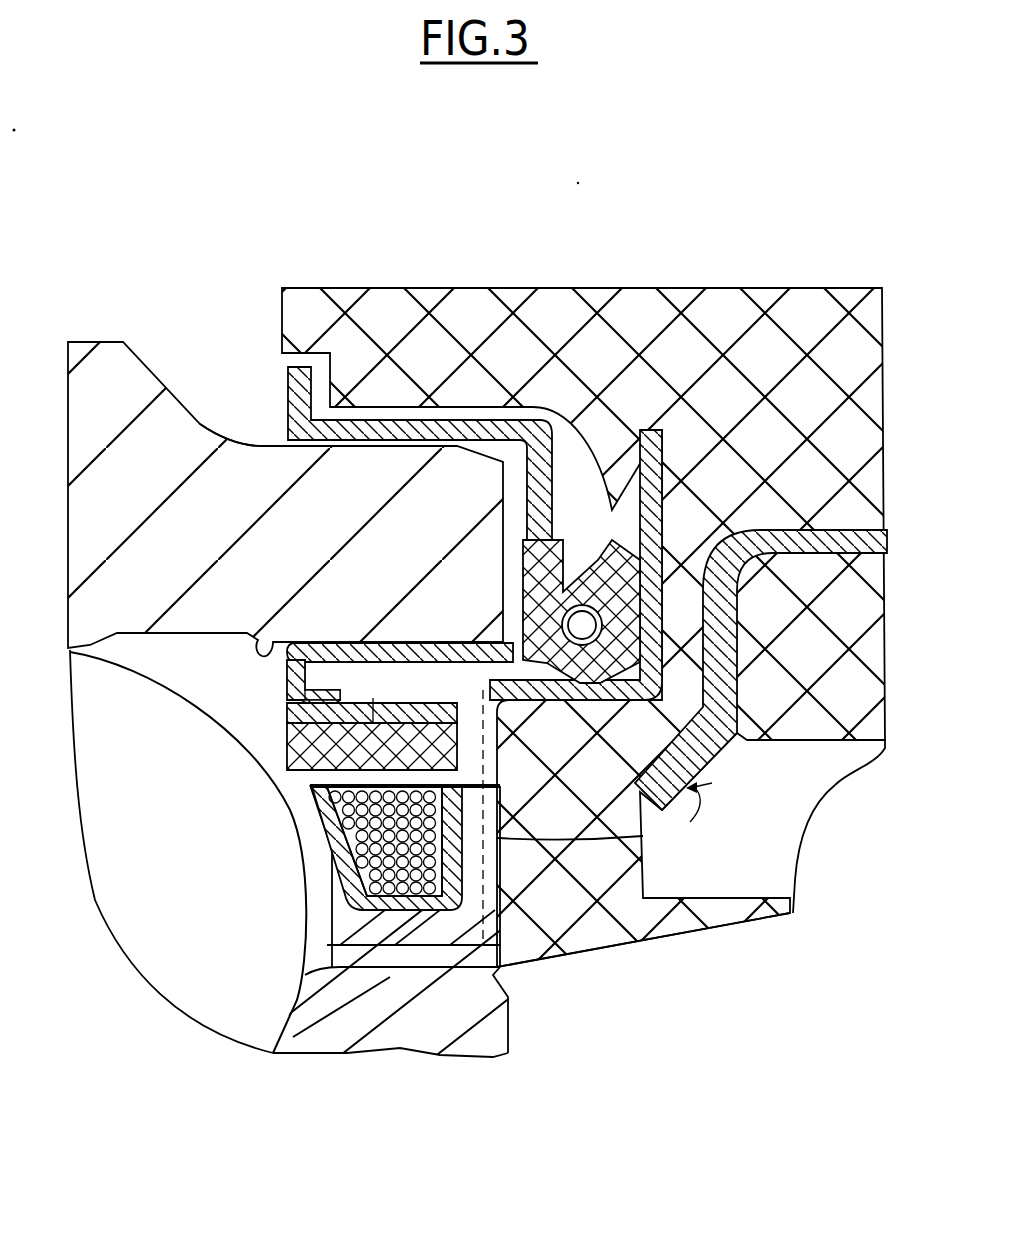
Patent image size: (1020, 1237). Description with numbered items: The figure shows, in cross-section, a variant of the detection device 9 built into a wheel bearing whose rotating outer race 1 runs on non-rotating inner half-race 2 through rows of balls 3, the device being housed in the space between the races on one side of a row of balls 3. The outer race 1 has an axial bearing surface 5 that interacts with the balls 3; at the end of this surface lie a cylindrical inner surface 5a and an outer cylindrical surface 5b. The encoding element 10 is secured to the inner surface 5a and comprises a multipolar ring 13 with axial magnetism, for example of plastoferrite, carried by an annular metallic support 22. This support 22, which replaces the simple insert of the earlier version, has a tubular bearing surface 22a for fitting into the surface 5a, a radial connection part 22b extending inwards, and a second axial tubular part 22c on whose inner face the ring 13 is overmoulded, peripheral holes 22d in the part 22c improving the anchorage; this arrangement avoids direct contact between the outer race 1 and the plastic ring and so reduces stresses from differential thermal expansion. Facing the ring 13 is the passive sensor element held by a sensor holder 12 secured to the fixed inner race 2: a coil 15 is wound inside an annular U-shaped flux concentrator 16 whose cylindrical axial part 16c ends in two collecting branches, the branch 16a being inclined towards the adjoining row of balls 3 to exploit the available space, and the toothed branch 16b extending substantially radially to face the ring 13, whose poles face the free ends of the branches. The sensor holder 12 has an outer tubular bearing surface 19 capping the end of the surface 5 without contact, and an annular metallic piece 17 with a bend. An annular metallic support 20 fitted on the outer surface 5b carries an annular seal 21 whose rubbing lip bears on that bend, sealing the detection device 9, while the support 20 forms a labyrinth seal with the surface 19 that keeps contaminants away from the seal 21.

The rotating outer race 1 is at (86, 343).
The non-rotating inner half-race 2 is at (387, 1005).
The balls 3 is at (157, 913).
The axial bearing surface 5 is at (118, 397).
The cylindrical inner surface 5a is at (240, 650).
The outer cylindrical surface 5b is at (282, 430).
The detection device 9 is at (673, 278).
The encoding element 10 is at (512, 518).
The sensor holder 12 is at (603, 923).
The multipolar ring 13 is at (425, 695).
The coil 15 is at (390, 843).
The flux concentrator 16 is at (345, 957).
The collecting branch 16a is at (322, 832).
The collecting branch 16b is at (387, 973).
The cylindrical axial part 16c is at (380, 922).
The annular metallic piece 17 is at (457, 957).
The outer tubular bearing surface 19 is at (580, 350).
The annular metallic support 20 is at (462, 738).
The annular seal 21 is at (540, 600).
The annular metallic support 22 is at (340, 668).
The tubular bearing surface 22a is at (400, 733).
The radial connection part 22b is at (300, 687).
The second axial tubular part 22c is at (326, 713).
The peripheral holes 22d is at (372, 513).